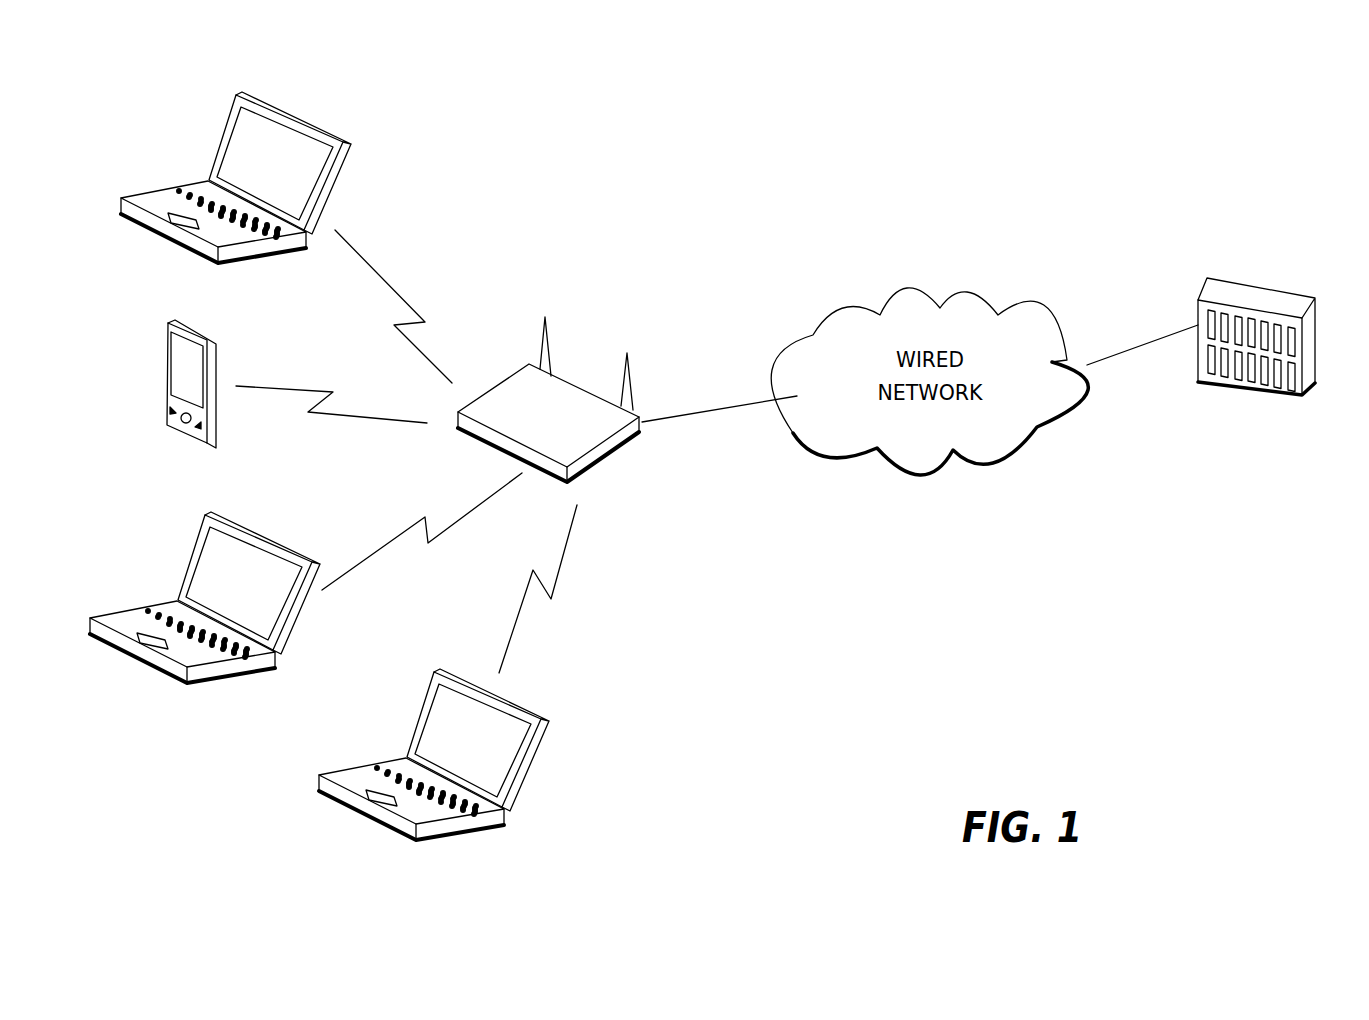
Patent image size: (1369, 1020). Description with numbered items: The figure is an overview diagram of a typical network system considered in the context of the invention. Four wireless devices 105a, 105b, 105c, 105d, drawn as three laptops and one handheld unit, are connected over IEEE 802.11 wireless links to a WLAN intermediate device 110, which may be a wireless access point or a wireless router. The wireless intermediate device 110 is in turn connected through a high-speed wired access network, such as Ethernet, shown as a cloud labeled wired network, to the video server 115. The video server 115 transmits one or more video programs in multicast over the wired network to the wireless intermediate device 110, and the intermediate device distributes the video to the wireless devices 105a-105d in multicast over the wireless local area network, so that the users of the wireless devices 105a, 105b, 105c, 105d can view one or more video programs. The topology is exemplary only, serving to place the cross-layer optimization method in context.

The wireless device 105a is at (172, 186).
The wireless device 105b is at (166, 382).
The wireless device 105c is at (187, 571).
The wireless device 105d is at (367, 766).
The wireless intermediate device 110 is at (715, 543).
The video server 115 is at (1258, 283).